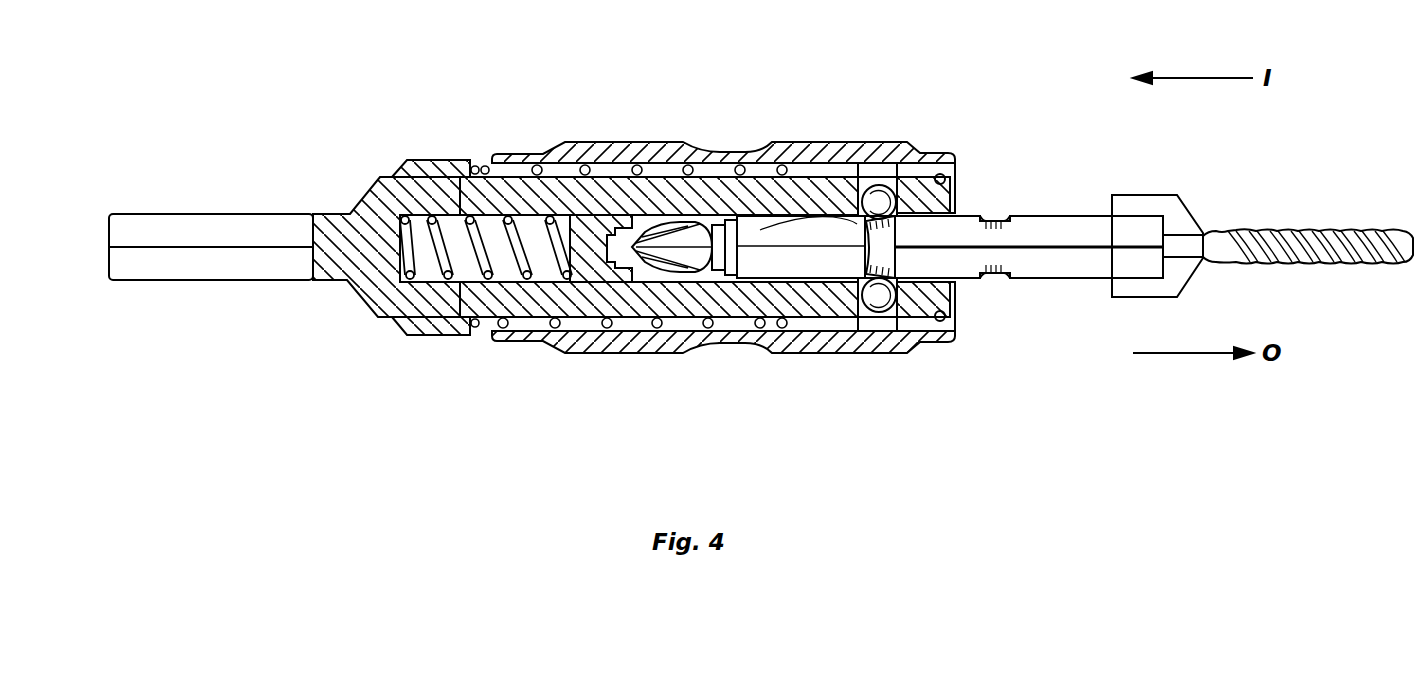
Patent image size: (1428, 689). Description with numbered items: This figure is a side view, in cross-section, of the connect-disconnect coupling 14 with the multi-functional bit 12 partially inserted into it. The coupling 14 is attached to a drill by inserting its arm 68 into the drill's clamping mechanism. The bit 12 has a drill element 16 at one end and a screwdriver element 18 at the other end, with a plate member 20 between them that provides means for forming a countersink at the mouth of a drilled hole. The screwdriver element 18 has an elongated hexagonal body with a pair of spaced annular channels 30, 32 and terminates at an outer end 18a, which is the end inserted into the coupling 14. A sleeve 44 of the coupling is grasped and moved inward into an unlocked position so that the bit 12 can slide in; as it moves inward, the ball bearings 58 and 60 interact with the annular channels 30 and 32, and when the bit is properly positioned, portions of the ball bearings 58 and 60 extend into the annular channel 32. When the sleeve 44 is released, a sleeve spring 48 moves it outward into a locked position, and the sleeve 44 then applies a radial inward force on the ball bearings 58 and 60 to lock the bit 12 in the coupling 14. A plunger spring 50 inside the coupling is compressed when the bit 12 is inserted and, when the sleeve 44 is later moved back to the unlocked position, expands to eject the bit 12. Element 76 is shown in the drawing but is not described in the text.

The multi-functional bit 12 is at (1076, 292).
The connect-disconnect coupling 14 is at (560, 136).
The drill element 16 is at (1362, 258).
The screwdriver element 18 is at (754, 236).
The outer end of the screwdriver element 18a is at (690, 263).
The plate member 20 is at (1133, 203).
The annular channel 30 is at (888, 265).
The annular channel 32 is at (996, 282).
The sleeve 44 is at (830, 150).
The sleeve spring 48 is at (645, 150).
The plunger spring 50 is at (503, 167).
The ball bearing 58 is at (874, 186).
The ball bearing 60 is at (880, 300).
The arm 68 is at (258, 228).
The end cap 76 is at (956, 165).